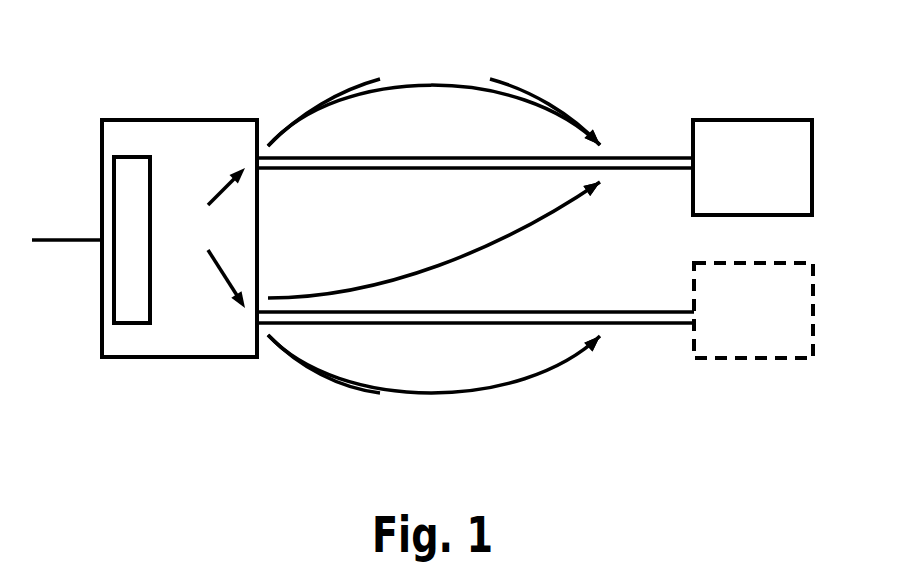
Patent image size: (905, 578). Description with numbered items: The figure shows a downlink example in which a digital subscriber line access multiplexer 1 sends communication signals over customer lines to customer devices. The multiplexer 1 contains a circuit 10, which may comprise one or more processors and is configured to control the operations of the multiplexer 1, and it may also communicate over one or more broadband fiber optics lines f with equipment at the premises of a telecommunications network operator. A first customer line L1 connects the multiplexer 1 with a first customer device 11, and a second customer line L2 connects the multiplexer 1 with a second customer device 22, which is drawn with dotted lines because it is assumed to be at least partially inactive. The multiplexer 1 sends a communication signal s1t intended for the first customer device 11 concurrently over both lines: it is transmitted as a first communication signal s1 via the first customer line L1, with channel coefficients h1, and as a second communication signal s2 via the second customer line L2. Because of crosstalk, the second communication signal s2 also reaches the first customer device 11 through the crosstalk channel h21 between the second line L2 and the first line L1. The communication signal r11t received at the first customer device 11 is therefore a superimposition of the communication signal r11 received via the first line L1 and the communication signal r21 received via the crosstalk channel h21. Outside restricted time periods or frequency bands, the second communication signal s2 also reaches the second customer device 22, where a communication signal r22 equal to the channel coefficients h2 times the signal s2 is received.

The digital subscriber line access multiplexer 1 is at (138, 345).
The circuit 10 is at (126, 167).
The broadband fiber optics lines f is at (55, 235).
The communication signal s1t is at (205, 238).
The first customer line L1 is at (327, 168).
The second customer line L2 is at (623, 308).
The first customer device 11 is at (753, 133).
The second customer device 22 is at (753, 345).
The channel coefficients of the first customer line h1 is at (434, 98).
The first communication signal s1 is at (324, 109).
The communication signal received via the first line r11 is at (545, 110).
The communication signal received at customer device r11t is at (631, 128).
The crosstalk channel h21 is at (434, 240).
The communication signal received via the crosstalk channel r21 is at (574, 220).
The channel coefficients of the second customer line h2 is at (434, 384).
The second communication signal s2 is at (324, 372).
The communication signal received at the second customer device r22 is at (572, 373).